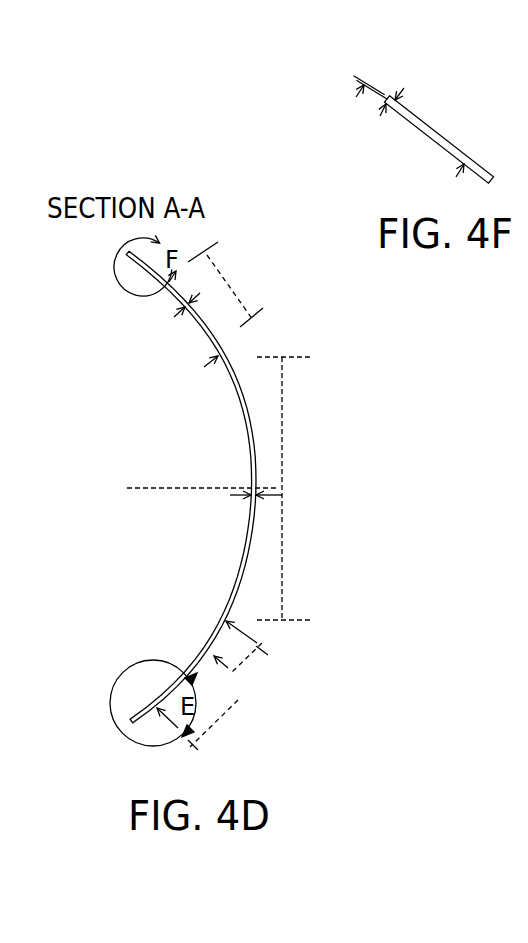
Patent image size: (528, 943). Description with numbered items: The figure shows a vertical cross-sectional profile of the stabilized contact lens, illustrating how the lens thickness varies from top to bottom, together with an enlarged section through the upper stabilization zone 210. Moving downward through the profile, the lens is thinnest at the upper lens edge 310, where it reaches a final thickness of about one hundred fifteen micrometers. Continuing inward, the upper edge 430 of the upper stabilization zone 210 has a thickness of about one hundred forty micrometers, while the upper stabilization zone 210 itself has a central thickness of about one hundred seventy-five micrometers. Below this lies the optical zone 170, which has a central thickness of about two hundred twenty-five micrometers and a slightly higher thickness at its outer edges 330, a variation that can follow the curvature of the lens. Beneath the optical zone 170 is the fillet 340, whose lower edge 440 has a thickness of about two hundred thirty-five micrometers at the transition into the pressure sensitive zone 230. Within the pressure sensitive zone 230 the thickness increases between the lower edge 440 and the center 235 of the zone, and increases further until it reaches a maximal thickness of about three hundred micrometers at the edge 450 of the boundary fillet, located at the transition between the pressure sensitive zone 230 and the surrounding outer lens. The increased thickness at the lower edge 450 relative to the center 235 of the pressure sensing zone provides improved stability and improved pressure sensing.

In FIG. 4D, the optical zone 170 is at (283, 495).
In FIG. 4D, the upper stabilization zone 210 is at (230, 288).
In FIG. 4D, the pressure sensitive zone 230 is at (224, 715).
In FIG. 4D, the center of the pressure sensitive zone 235 is at (177, 679).
In FIG. 4F, the upper lens edge 310 is at (377, 89).
In FIG. 4D, the outer edges of the optical zone 330 is at (222, 343).
In FIG. 4D, the fillet 340 is at (252, 653).
In FIG. 4F, the upper edge of the upper stabilization zone 430 is at (478, 164).
In FIG. 4D, the lower edge of fillet 440 is at (199, 667).
In FIG. 4D, the edge of boundary fillet 450 is at (157, 698).